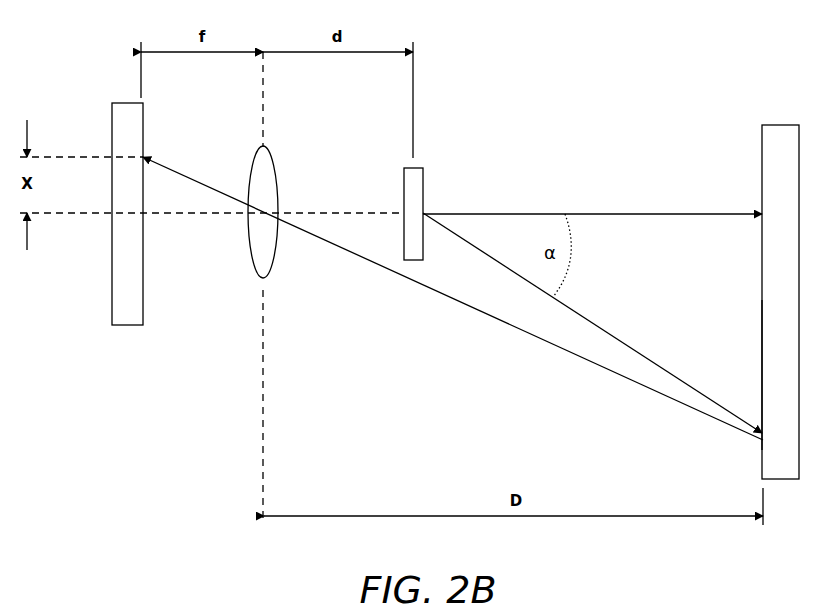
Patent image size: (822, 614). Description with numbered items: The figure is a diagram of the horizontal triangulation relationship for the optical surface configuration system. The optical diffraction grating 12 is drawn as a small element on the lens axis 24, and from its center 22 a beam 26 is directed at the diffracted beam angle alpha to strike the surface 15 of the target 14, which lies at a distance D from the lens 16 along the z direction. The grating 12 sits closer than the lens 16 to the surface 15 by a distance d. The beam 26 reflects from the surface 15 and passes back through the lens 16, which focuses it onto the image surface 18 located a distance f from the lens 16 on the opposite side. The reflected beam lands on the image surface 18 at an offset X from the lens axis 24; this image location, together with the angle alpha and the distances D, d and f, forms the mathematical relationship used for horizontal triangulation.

The optical diffraction grating 12 is at (418, 168).
The target 14 is at (778, 125).
The surface 15 is at (762, 375).
The lens 16 is at (273, 265).
The image surface 18 is at (129, 325).
The center 22 is at (685, 214).
The lens axis 24 is at (306, 213).
The beam 26 is at (612, 338).